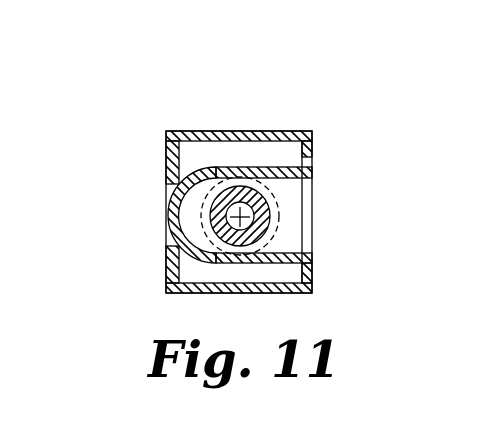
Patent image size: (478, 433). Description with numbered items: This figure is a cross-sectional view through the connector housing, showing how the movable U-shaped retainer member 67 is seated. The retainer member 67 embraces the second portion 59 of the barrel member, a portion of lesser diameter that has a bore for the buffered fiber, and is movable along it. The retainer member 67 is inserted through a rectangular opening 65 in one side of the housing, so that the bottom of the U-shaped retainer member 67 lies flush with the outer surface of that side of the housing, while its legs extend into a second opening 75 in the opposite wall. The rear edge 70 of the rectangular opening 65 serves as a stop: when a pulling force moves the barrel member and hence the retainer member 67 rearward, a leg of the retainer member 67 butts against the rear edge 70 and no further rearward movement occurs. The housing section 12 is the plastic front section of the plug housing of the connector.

The front section 12 is at (258, 131).
The second portion 59 is at (254, 211).
The rectangular opening 65 is at (168, 246).
The U-shaped retainer member 67 is at (216, 167).
The rear edge 70 is at (173, 173).
The second opening 75 is at (307, 222).